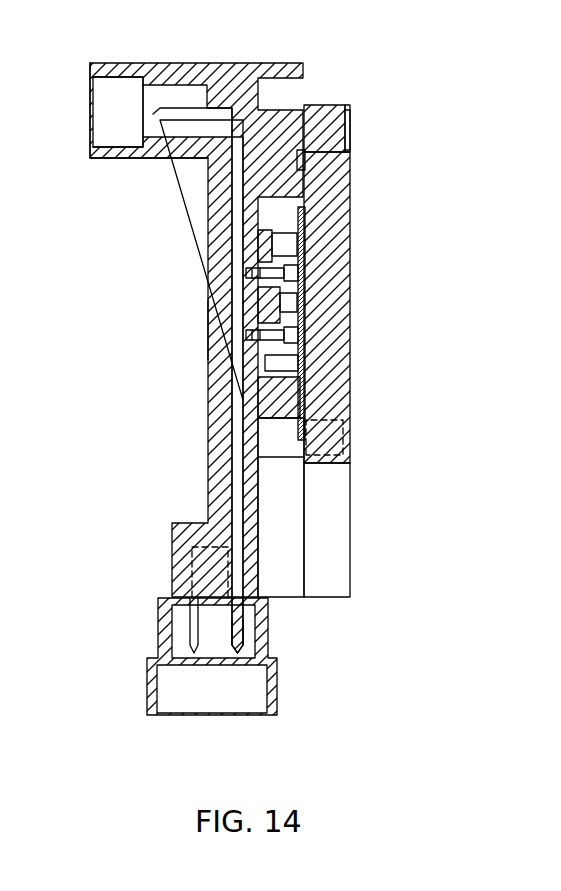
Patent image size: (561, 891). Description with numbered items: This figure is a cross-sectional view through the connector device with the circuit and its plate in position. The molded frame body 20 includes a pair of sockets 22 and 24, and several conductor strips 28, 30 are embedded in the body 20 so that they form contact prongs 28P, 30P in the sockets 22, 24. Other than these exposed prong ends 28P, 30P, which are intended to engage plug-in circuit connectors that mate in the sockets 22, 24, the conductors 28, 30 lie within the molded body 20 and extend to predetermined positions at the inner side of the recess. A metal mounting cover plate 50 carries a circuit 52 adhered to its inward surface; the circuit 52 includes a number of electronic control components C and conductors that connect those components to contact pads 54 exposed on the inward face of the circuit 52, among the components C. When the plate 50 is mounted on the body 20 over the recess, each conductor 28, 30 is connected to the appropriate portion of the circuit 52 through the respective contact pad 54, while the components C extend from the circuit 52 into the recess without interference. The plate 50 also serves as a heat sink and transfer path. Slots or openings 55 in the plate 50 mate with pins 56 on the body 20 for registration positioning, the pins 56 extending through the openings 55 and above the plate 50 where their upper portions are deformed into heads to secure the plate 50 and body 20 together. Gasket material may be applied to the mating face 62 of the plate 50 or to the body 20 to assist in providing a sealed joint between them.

The molded frame body 20 is at (203, 330).
The socket 22 is at (105, 160).
The socket 24 is at (268, 632).
The conductor strip 28 is at (236, 486).
The contact prong 28P is at (192, 630).
The conductor strip 30 is at (232, 228).
The contact prong 30P is at (190, 107).
The metal mounting cover plate 50 is at (352, 335).
The circuit 52 is at (347, 370).
The contact pad 54 is at (296, 276).
The slot or opening 55 is at (346, 141).
The pin 56 is at (346, 125).
The mating face 62 is at (300, 176).
The electronic control component C is at (284, 243).